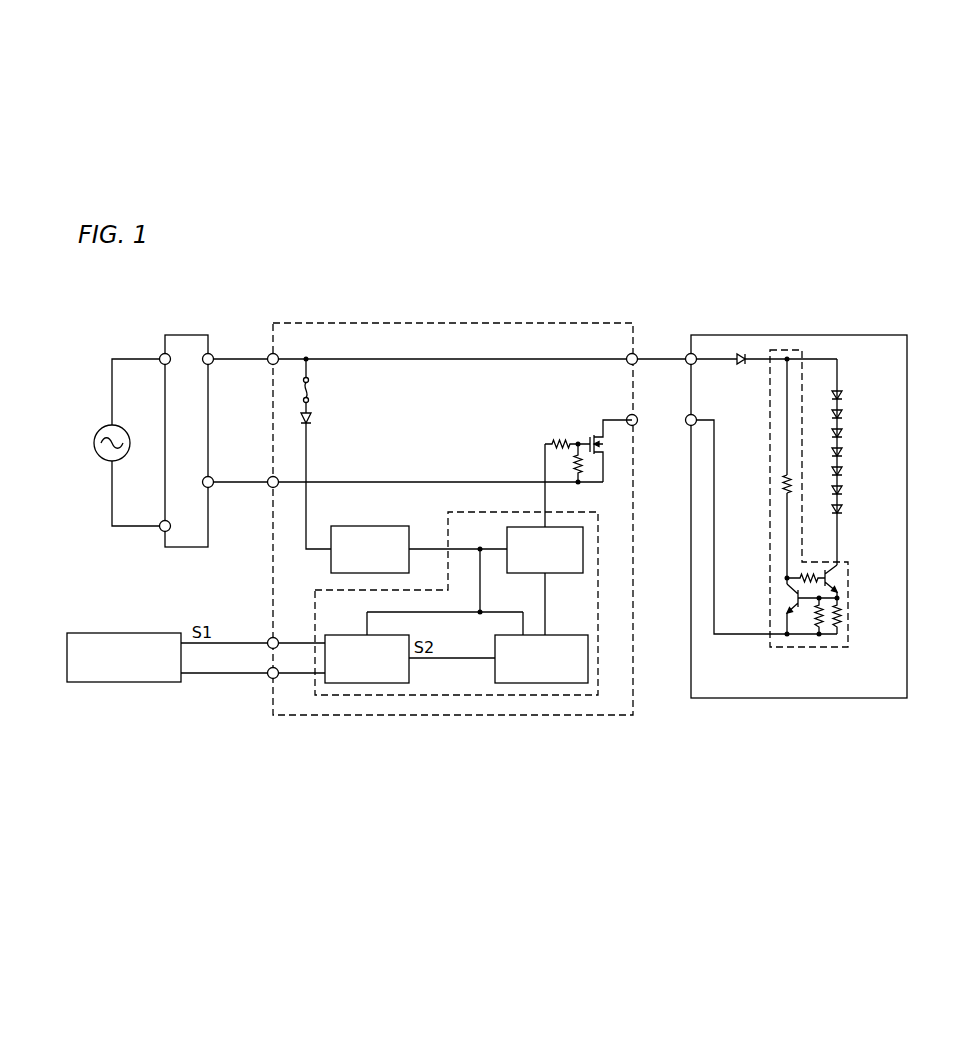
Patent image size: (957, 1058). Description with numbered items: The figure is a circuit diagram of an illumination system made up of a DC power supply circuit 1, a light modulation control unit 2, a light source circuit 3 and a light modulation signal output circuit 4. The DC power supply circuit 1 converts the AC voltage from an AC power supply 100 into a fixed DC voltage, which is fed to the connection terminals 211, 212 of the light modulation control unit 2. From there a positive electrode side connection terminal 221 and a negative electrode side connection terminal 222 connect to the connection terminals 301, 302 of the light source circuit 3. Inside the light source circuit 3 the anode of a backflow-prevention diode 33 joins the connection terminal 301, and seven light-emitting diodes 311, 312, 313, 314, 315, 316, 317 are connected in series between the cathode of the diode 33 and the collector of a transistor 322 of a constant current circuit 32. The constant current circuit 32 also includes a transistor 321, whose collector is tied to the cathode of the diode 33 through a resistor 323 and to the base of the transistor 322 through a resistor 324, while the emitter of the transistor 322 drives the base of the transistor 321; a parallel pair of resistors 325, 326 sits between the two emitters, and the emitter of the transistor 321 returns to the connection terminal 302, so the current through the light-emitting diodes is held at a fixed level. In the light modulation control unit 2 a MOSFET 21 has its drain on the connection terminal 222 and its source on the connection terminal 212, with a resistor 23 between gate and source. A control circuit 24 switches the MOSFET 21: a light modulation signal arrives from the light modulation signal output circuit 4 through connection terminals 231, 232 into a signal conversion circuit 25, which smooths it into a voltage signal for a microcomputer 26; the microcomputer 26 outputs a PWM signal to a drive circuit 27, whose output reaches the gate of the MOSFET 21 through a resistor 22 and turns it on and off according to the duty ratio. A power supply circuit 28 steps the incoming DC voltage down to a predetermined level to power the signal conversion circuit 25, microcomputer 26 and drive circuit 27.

The DC power supply circuit 1 is at (178, 335).
The AC power supply 100 is at (104, 430).
The light modulation control unit 2 is at (525, 322).
The light source circuit 3 is at (831, 335).
The light modulation signal output circuit 4 is at (108, 633).
The MOSFET 21 is at (588, 437).
The resistor 22 is at (552, 441).
The resistor 23 is at (575, 465).
The control circuit 24 is at (447, 514).
The signal conversion circuit 25 is at (350, 635).
The microcomputer 26 is at (495, 648).
The drive circuit 27 is at (507, 538).
The power supply circuit 28 is at (352, 526).
The constant current circuit 32 is at (787, 647).
The diode 33 is at (742, 366).
The connection terminal 211 is at (268, 356).
The connection terminal 212 is at (268, 487).
The positive electrode side connection terminal 221 is at (627, 355).
The negative electrode side connection terminal 222 is at (627, 415).
The connection terminal 231 is at (268, 640).
The connection terminal 232 is at (268, 680).
The connection terminal 301 is at (688, 355).
The connection terminal 302 is at (688, 415).
The light-emitting diode 311 is at (845, 395).
The light-emitting diode 312 is at (845, 414).
The light-emitting diode 313 is at (845, 433).
The light-emitting diode 314 is at (845, 452).
The light-emitting diode 315 is at (845, 471).
The light-emitting diode 316 is at (845, 490).
The light-emitting diode 317 is at (845, 509).
The transistor 321 is at (790, 598).
The transistor 322 is at (840, 580).
The resistor 323 is at (785, 488).
The resistor 324 is at (800, 574).
The resistor 325 is at (823, 624).
The resistor 326 is at (845, 620).